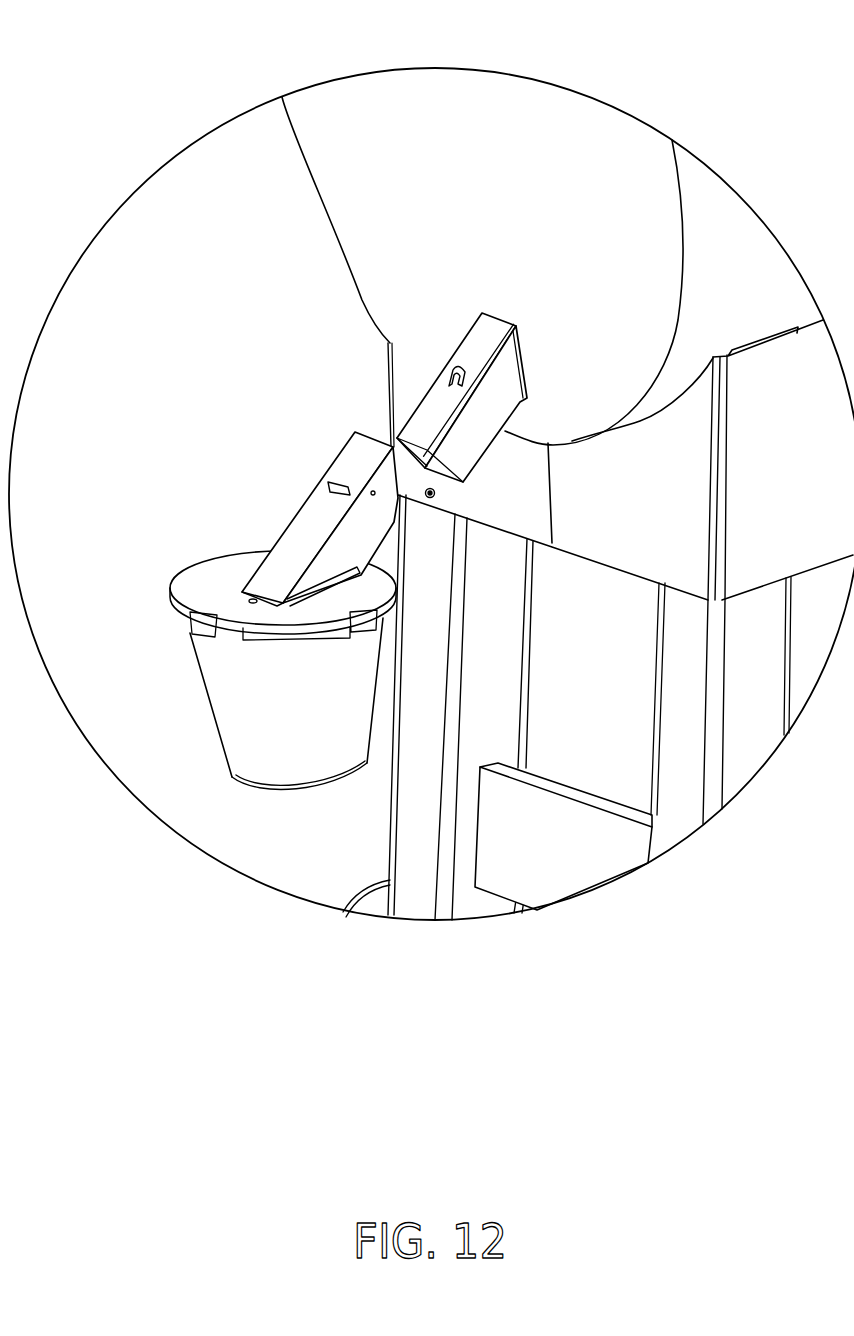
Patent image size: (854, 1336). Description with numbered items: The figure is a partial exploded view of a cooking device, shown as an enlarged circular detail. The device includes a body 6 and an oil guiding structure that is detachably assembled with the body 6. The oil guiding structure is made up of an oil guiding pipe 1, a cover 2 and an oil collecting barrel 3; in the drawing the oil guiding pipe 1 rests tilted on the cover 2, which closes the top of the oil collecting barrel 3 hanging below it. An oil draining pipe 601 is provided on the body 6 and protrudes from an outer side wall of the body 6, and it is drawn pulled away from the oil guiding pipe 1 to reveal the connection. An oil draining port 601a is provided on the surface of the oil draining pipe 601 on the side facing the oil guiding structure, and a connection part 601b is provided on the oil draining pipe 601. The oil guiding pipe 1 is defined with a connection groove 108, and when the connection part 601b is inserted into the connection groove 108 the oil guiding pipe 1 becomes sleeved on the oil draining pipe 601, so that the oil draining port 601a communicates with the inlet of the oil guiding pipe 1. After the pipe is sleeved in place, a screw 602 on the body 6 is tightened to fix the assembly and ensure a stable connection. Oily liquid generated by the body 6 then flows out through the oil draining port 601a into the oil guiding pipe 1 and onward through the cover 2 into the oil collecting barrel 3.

The body 6 is at (491, 120).
The oil draining pipe 601 is at (492, 332).
The oil draining port 601a is at (405, 456).
The connection part 601b is at (434, 376).
The screw 602 is at (437, 493).
The connection groove 108 is at (318, 500).
The oil guiding pipe 1 is at (365, 545).
The cover 2 is at (203, 598).
The oil collecting barrel 3 is at (258, 777).